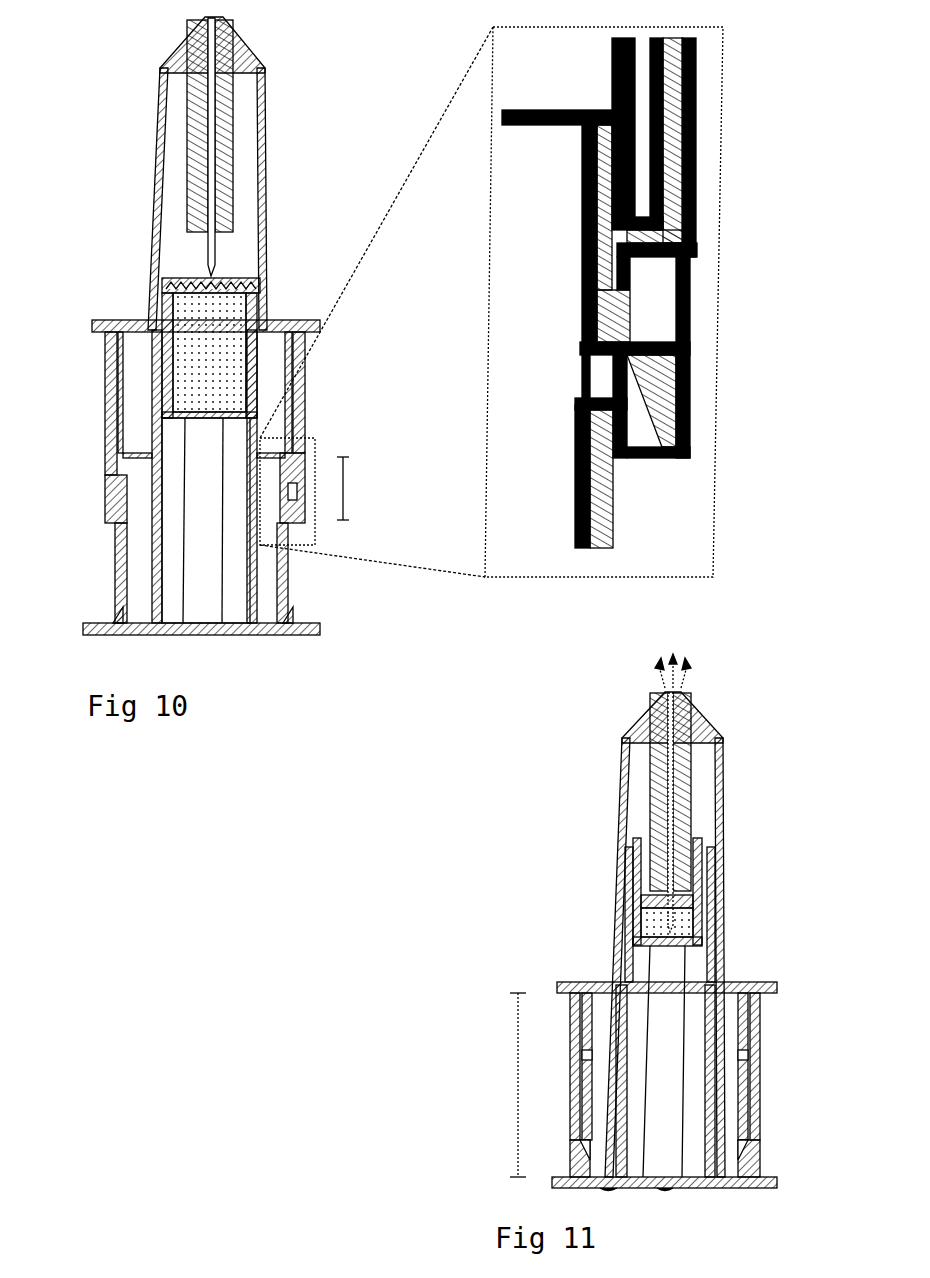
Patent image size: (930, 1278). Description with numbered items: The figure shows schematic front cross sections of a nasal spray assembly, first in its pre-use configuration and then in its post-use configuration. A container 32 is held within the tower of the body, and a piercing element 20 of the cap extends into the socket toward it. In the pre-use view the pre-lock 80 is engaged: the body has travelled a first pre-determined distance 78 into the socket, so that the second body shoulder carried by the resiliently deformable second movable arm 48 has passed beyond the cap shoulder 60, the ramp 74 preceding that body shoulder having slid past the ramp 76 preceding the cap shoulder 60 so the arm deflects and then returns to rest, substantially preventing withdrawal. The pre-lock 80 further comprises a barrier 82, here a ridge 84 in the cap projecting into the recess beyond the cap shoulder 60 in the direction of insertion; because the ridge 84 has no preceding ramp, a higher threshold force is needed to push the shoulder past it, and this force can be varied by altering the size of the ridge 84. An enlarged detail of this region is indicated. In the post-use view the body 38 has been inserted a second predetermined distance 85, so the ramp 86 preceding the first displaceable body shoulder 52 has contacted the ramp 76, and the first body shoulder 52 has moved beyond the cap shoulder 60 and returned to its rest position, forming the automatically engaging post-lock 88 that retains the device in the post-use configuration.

In FIG. 10, the piercing element 20 is at (200, 243).
In FIG. 11, the piercing element 20 is at (720, 917).
In FIG. 10, the container 32 is at (150, 300).
In FIG. 11, the container 32 is at (722, 865).
In FIG. 11, the housing body 38 is at (562, 1150).
In FIG. 10, the second movable arm 48 is at (693, 285).
In FIG. 10, the first displaceable body shoulder 52 is at (605, 360).
In FIG. 11, the first displaceable body shoulder 52 is at (730, 1190).
In FIG. 10, the cap shoulder 60 is at (693, 330).
In FIG. 11, the cap shoulder 60 is at (762, 1148).
In FIG. 10, the ramp 74 is at (110, 493).
In FIG. 10, the ramp 76 is at (110, 530).
In FIG. 10, the first pre-determined distance 78 is at (347, 492).
In FIG. 10, the pre-lock 80 is at (347, 428).
In FIG. 10, the barrier 82 is at (105, 460).
In FIG. 10, the ridge 84 is at (105, 393).
In FIG. 11, the second predetermined distance 85 is at (518, 1075).
In FIG. 10, the ramp 86 is at (283, 617).
In FIG. 11, the ramp 86 is at (760, 1140).
In FIG. 11, the post-lock 88 is at (765, 1157).